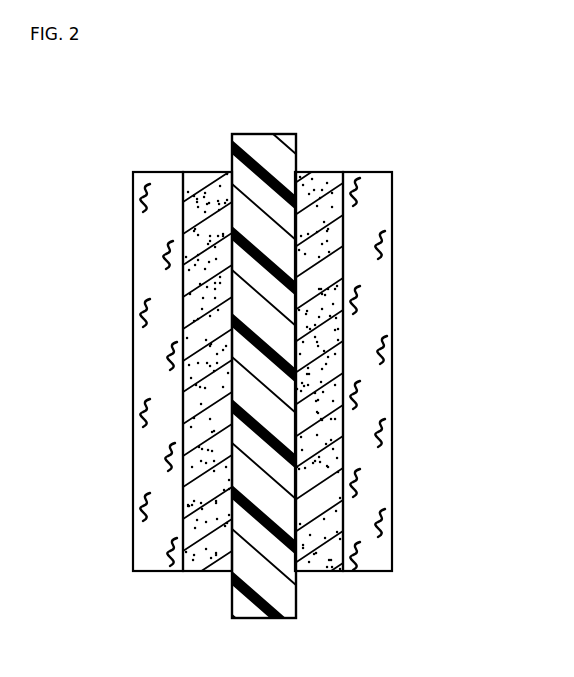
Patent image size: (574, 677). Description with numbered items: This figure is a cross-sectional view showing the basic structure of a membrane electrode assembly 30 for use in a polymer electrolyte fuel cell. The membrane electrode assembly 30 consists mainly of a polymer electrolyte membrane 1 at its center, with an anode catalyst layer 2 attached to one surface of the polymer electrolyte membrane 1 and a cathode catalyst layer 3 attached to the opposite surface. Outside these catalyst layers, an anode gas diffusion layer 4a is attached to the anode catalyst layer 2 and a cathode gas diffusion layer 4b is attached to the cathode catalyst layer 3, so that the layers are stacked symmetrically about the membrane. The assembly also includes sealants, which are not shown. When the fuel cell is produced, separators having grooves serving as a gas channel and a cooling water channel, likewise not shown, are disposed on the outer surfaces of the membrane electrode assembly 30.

The membrane electrode assembly 30 is at (384, 134).
The polymer electrolyte membrane 1 is at (288, 162).
The anode catalyst layer 2 is at (204, 193).
The cathode catalyst layer 3 is at (323, 571).
The anode gas diffusion layer 4a is at (152, 356).
The cathode gas diffusion layer 4b is at (372, 375).